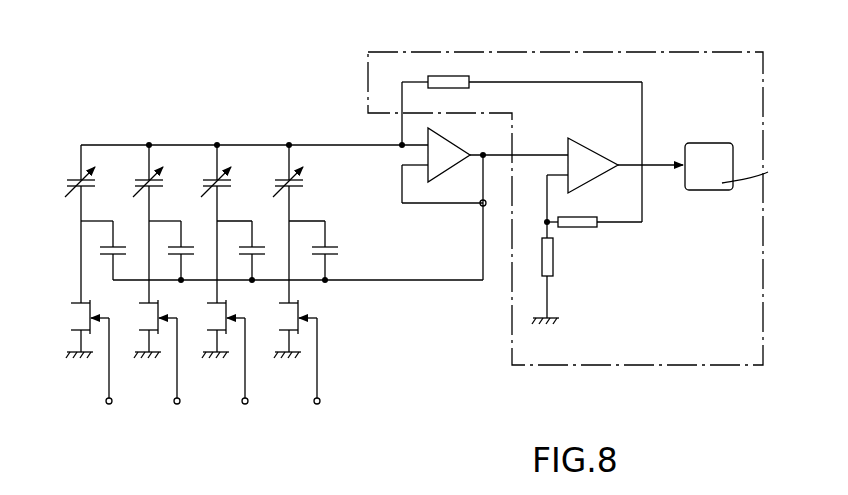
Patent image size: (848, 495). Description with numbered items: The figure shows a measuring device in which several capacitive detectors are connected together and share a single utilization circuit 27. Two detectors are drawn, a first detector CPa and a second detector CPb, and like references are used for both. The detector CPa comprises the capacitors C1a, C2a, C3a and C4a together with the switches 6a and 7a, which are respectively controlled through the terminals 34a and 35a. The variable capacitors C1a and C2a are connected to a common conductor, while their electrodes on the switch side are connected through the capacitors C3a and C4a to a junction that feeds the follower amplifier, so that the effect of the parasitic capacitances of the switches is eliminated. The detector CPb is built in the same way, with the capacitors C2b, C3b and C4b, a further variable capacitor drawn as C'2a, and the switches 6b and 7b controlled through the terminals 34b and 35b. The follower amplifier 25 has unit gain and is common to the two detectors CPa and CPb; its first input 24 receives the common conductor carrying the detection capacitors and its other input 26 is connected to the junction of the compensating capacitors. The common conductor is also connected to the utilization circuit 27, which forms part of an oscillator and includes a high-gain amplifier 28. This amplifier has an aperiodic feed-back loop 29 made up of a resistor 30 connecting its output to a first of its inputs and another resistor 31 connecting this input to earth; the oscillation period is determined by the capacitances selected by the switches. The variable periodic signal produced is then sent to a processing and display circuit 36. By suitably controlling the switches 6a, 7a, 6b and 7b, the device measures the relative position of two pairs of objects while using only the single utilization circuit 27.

The utilization circuit 27 is at (578, 52).
The first input of the follower amplifier 24 is at (426, 147).
The follower amplifier 25 is at (441, 139).
The other input of the follower amplifier 26 is at (432, 174).
The high-gain amplifier 28 is at (586, 157).
The feed-back loop 29 is at (643, 249).
The resistor 30 is at (585, 229).
The resistor 31 is at (556, 262).
The processing and display circuit 36 is at (706, 163).
The switch 6a is at (80, 314).
The switch 7a is at (148, 312).
The switch 6b is at (216, 312).
The switch 7b is at (286, 312).
The terminal 34a is at (109, 404).
The terminal 35a is at (177, 404).
The terminal 34b is at (245, 404).
The terminal 35b is at (317, 404).
The capacitor C1a is at (77, 180).
The capacitor C2a is at (135, 195).
The variable capacitor C'2a is at (199, 173).
The capacitor C2b is at (274, 197).
The capacitor C3a is at (116, 245).
The capacitor C4a is at (186, 245).
The capacitor C3b is at (258, 245).
The capacitor C4b is at (331, 246).
The capacitive detector CPa is at (113, 124).
The capacitive detector CPb is at (250, 124).